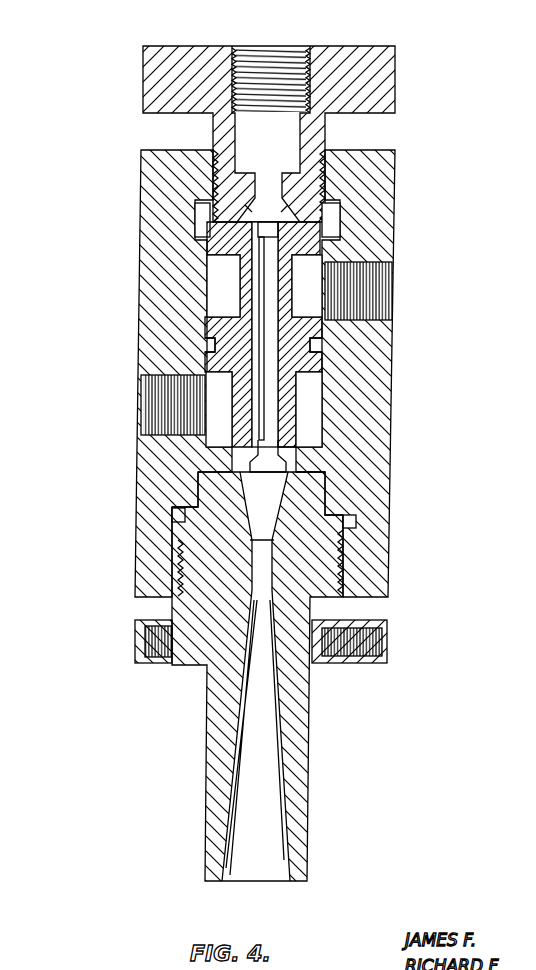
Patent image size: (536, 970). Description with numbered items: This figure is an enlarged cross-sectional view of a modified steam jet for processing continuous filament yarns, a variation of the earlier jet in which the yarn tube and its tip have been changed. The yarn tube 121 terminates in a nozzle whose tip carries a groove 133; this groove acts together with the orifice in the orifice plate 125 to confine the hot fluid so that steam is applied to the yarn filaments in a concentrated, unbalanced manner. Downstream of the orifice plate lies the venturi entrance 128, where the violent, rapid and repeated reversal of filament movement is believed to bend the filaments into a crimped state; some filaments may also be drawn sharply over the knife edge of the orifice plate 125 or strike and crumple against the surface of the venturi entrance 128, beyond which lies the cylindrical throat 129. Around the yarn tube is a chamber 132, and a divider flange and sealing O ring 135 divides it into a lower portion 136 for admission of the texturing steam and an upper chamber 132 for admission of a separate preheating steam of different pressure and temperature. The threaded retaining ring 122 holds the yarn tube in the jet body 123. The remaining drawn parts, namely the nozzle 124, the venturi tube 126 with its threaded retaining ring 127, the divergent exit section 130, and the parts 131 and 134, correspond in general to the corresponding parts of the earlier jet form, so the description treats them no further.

The yarn tube 121 is at (238, 392).
The threaded retaining ring 122 is at (177, 46).
The jet body 123 is at (150, 164).
The sleeve end 124 is at (298, 450).
The orifice plate 125 is at (320, 470).
The discharge tube 126 is at (307, 750).
The lock nut 127 is at (138, 640).
The venturi entrance 128 is at (262, 500).
The cylindrical throat 129 is at (258, 563).
The liner 130 is at (247, 738).
The threads 131 is at (200, 403).
The chamber 132 is at (230, 326).
The groove 133 is at (256, 468).
The chamber 134 is at (218, 295).
The divider flange and sealing O ring 135 is at (213, 350).
The lower portion 136 is at (217, 425).